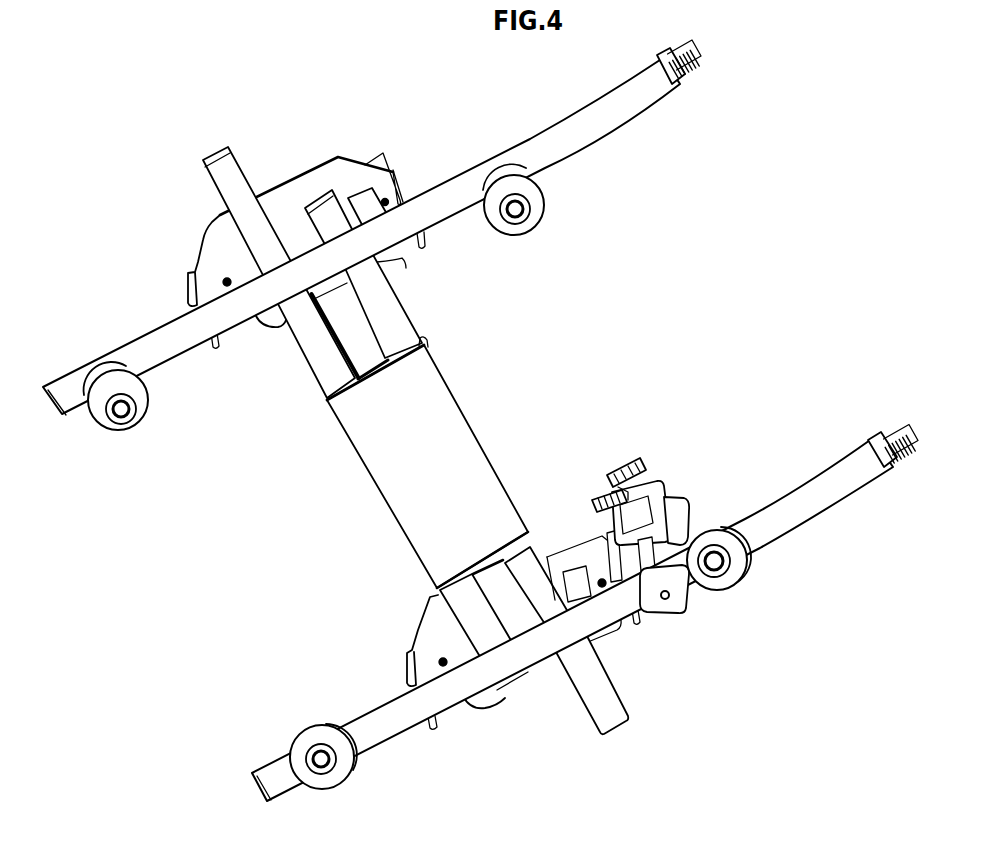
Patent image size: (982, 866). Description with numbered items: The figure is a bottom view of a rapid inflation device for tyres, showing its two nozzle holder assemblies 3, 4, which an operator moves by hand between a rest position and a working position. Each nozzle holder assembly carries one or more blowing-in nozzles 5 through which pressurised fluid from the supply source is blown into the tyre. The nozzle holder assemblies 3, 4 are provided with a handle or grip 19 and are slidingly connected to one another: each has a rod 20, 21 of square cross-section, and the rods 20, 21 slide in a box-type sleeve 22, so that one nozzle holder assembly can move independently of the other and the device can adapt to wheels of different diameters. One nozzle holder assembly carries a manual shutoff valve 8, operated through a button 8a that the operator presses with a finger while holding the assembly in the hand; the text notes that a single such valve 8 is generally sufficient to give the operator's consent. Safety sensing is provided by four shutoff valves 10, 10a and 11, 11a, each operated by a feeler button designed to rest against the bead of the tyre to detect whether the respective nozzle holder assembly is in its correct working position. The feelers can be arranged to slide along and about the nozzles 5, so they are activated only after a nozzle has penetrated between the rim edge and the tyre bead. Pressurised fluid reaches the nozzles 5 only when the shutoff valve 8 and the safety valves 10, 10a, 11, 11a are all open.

The nozzle holder assembly 3 is at (847, 497).
The nozzle holder assembly 4 is at (627, 112).
The blowing-in nozzle 5 is at (130, 420).
The shutoff valve 8 is at (670, 498).
The button 8a is at (667, 612).
The shutoff valve 10 is at (340, 775).
The shutoff valve 10a is at (733, 582).
The shutoff valve 11 is at (107, 425).
The shutoff valve 11a is at (538, 207).
The handle 19 is at (341, 157).
The rod 20 is at (322, 343).
The rod 21 is at (395, 315).
The box-type sleeve 22 is at (467, 443).